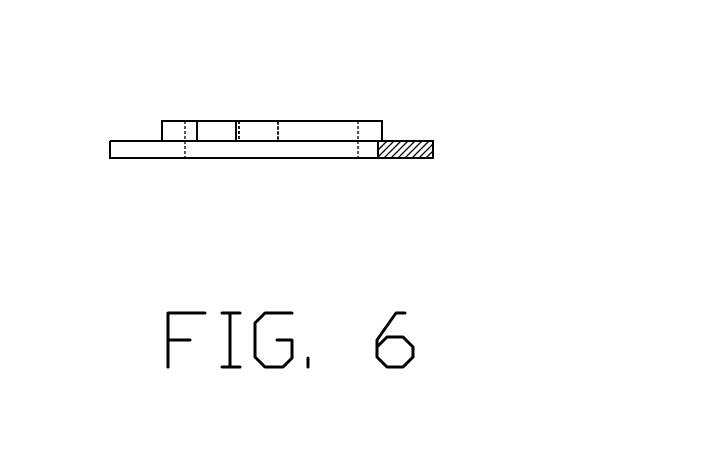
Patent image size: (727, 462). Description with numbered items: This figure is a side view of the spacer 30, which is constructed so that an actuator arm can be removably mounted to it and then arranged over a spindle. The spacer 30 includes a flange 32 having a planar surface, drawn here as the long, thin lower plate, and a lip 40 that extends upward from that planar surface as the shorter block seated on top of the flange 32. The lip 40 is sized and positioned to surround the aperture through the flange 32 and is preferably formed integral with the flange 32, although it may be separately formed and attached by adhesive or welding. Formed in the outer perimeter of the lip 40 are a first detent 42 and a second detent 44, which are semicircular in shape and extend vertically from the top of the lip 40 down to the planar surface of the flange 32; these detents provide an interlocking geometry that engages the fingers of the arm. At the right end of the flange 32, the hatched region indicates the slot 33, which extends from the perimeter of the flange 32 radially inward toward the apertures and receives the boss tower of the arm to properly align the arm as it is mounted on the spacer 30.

The spacer 30 is at (132, 93).
The flange 32 is at (118, 157).
The slot 33 is at (408, 158).
The lip 40 is at (165, 135).
The first detent 42 is at (210, 130).
The second detent 44 is at (252, 132).